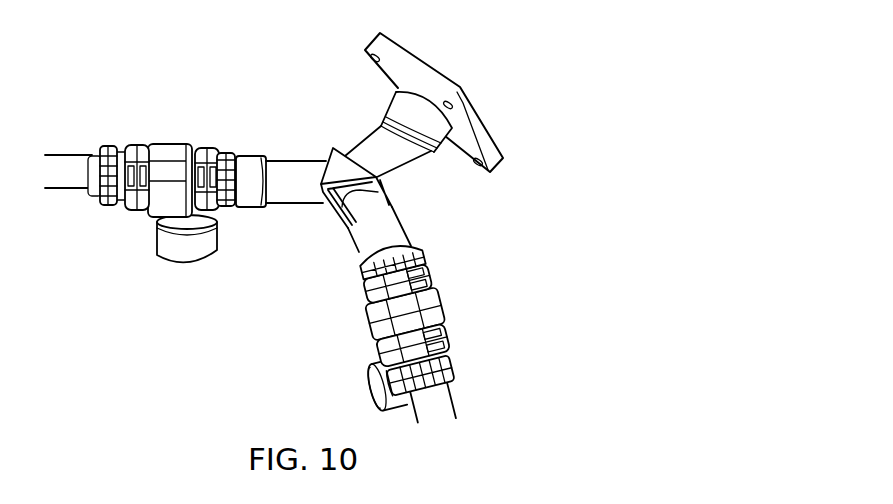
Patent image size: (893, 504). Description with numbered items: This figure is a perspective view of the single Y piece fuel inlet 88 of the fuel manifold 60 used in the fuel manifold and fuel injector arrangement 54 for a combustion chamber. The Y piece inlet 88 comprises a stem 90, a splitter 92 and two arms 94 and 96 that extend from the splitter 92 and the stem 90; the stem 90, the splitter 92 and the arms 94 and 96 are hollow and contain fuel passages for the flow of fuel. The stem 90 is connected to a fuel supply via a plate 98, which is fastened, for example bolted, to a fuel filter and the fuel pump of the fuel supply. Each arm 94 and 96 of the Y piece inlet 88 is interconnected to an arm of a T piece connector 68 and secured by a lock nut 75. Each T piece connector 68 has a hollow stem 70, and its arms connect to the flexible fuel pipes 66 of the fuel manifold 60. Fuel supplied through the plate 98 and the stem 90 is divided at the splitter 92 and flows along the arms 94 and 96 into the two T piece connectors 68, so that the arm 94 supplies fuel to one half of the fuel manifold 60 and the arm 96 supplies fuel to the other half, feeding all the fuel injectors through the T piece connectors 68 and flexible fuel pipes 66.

The fluid conduit assembly 54 is at (490, 402).
The fuel manifold 60 is at (60, 193).
The flexible fuel pipe 66 is at (58, 168).
The T piece connector 68 is at (173, 152).
The stem 70 is at (160, 248).
The lock nut 75 is at (140, 143).
The Y piece fuel inlet 88 is at (424, 160).
The stem 90 is at (398, 160).
The splitter 92 is at (387, 185).
The arm 94 is at (303, 205).
The arm 96 is at (360, 238).
The plate 98 is at (470, 115).